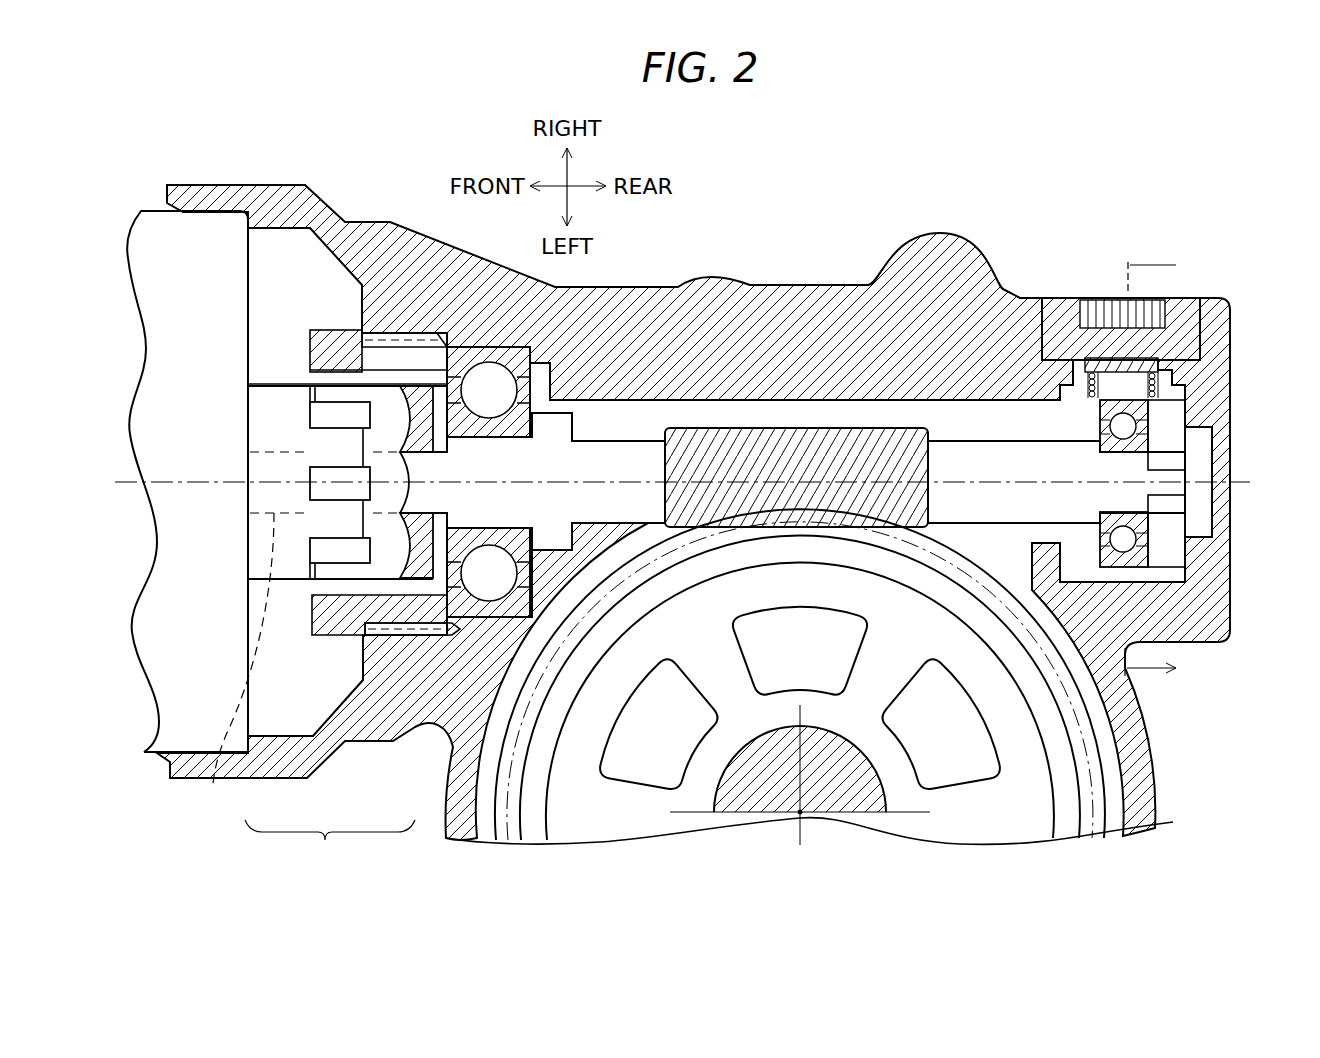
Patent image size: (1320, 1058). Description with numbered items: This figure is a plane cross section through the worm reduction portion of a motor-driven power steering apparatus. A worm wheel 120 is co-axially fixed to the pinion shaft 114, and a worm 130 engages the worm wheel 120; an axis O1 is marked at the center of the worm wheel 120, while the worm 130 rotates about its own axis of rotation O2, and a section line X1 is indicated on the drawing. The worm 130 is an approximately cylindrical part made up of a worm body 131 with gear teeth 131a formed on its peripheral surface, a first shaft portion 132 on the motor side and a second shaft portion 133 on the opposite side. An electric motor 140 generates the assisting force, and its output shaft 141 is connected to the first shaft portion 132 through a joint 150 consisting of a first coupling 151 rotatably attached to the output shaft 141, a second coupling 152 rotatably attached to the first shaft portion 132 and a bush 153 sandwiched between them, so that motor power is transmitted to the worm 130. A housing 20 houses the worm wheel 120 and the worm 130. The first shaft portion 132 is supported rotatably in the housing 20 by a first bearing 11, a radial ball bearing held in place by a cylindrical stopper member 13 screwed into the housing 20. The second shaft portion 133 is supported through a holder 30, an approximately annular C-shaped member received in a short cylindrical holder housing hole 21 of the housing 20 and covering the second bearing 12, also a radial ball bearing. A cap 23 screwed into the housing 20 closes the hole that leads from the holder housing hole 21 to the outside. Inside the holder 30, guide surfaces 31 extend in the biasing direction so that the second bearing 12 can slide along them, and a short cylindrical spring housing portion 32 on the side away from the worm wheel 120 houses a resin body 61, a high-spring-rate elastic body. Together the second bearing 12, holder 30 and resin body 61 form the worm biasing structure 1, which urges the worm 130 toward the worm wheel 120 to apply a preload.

The worm biasing structure 1 is at (1192, 215).
The first bearing 11 is at (495, 345).
The second bearing 12 is at (1150, 413).
The stopper member 13 is at (322, 340).
The housing 20 is at (690, 277).
The holder housing hole 21 is at (1150, 565).
The cap 23 is at (1066, 298).
The holder 30 is at (1190, 440).
The guide surfaces 31 is at (1167, 493).
The spring housing portion 32 is at (1165, 382).
The resin body 61 is at (1160, 360).
The pinion shaft 114 is at (782, 798).
The worm wheel 120 is at (1106, 746).
The worm 130 is at (865, 428).
The worm body 131 is at (840, 430).
The gear tooth 131a is at (768, 455).
The first shaft portion 132 is at (440, 470).
The second shaft portion 133 is at (1132, 500).
The electric motor 140 is at (157, 210).
The output shaft 141 is at (233, 663).
The joint 150 is at (330, 843).
The first coupling 151 is at (288, 582).
The second coupling 152 is at (395, 582).
The bush 153 is at (332, 568).
The worm wheel axis O1 is at (803, 815).
The axis of rotation O2 is at (700, 482).
The section line X1 is at (1143, 469).